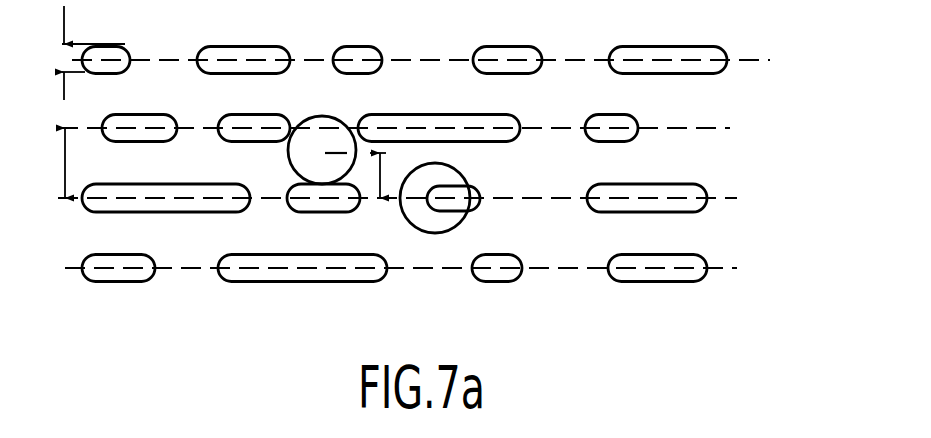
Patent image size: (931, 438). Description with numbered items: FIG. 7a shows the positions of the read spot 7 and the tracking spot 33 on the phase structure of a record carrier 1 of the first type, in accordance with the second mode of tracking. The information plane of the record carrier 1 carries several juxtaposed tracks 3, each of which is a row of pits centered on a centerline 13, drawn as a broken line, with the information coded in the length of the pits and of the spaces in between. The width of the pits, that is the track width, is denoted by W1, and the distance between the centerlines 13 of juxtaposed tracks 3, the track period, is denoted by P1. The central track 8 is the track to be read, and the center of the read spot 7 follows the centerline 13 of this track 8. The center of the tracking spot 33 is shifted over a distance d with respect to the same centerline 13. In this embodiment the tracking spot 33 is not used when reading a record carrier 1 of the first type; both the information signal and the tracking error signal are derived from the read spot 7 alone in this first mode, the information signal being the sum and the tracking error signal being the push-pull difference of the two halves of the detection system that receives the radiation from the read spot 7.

The record carrier 1 is at (802, 166).
The tracks 3 is at (436, 165).
The read spot 7 is at (457, 174).
The central track 8 is at (647, 198).
The centerlines 13 is at (382, 165).
The tracking spot 33 is at (289, 152).
The track width W1 is at (78, 50).
The track period P1 is at (55, 163).
The distance d is at (362, 175).